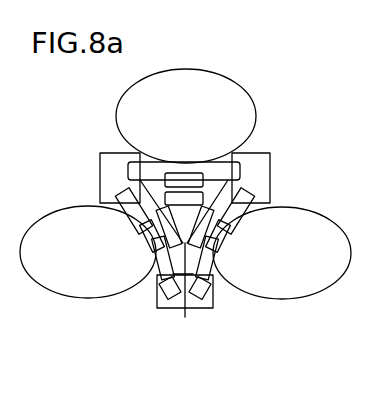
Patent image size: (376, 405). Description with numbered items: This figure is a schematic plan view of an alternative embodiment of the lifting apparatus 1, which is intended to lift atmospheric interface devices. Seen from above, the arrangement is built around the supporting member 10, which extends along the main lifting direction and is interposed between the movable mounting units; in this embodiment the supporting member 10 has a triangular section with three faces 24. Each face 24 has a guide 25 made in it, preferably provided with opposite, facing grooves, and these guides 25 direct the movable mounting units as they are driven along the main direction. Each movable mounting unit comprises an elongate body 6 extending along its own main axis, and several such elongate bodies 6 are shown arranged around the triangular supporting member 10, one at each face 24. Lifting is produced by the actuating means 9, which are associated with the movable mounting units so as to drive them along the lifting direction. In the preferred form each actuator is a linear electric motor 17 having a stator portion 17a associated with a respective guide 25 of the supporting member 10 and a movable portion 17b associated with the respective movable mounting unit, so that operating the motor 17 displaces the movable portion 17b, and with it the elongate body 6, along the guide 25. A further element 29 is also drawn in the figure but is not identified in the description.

The lifting apparatus 1 is at (273, 131).
The elongate body 6 is at (171, 120).
The actuating means 9 is at (191, 175).
The supporting member 10 is at (271, 163).
The linear electric motor 17 is at (217, 222).
The stator portion 17a is at (165, 181).
The movable portion 17b is at (167, 173).
The faces 24 is at (224, 173).
The guide 25 is at (115, 155).
The shaft 29 is at (205, 296).